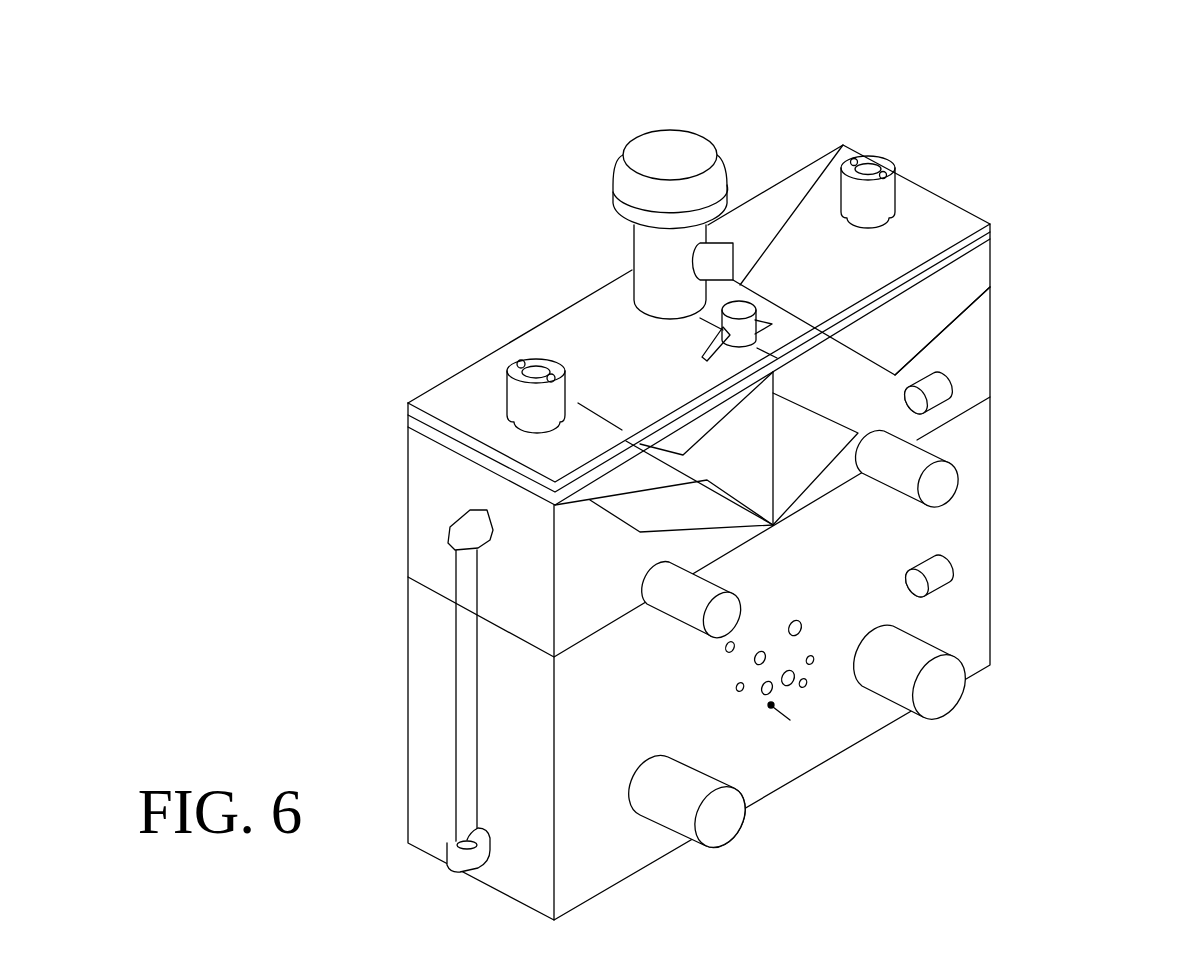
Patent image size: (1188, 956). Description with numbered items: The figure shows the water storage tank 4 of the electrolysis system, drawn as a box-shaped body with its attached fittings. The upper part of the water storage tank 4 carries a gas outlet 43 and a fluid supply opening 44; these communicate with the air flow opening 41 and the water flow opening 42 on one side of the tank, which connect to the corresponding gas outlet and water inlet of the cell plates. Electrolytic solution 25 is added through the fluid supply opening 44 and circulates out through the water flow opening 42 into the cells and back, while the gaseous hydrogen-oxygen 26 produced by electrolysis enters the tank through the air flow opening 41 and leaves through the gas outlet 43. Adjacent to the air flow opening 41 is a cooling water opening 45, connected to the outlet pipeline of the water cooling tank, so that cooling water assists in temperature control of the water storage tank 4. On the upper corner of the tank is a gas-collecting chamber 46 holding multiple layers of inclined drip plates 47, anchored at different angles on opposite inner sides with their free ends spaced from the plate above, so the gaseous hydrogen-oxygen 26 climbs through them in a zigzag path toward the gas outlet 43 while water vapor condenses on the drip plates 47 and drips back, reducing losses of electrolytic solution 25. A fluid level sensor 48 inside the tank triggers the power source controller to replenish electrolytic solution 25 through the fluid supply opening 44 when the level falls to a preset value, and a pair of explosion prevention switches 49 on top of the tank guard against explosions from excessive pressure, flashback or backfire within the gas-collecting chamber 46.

The water storage tank 4 is at (405, 452).
The electrolytic solution 25 is at (790, 720).
The gaseous hydrogen-oxygen 26 is at (443, 568).
The air flow opening 41 is at (940, 487).
The water flow opening 42 is at (932, 690).
The gas outlet 43 is at (724, 243).
The fluid supply opening 44 is at (615, 180).
The cooling water opening 45 is at (957, 380).
The gas-collecting chamber 46 is at (860, 271).
The drip plates 47 is at (933, 337).
The fluid level sensor 48 is at (463, 690).
The explosion prevention switches 49 is at (517, 362).